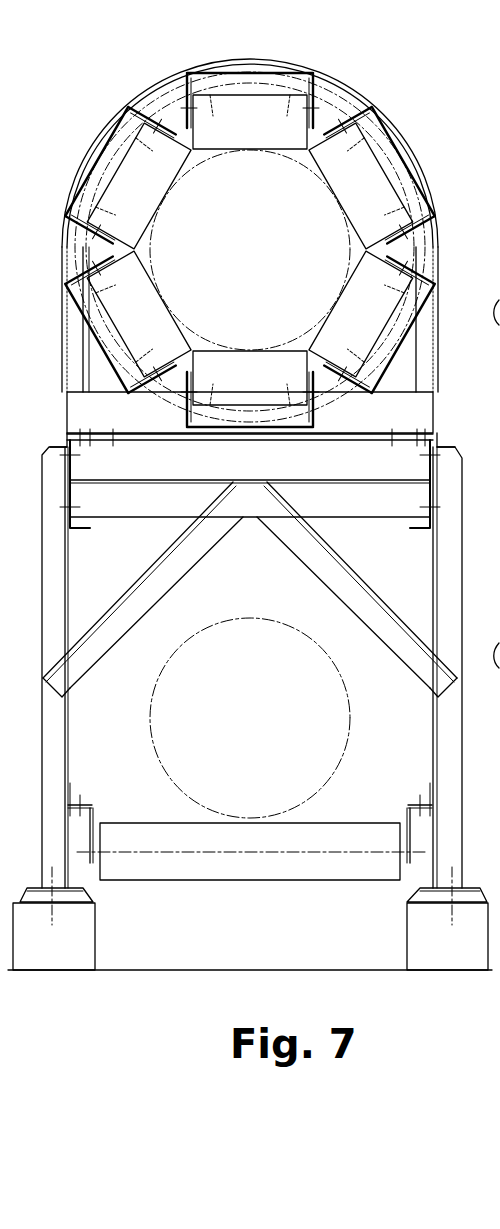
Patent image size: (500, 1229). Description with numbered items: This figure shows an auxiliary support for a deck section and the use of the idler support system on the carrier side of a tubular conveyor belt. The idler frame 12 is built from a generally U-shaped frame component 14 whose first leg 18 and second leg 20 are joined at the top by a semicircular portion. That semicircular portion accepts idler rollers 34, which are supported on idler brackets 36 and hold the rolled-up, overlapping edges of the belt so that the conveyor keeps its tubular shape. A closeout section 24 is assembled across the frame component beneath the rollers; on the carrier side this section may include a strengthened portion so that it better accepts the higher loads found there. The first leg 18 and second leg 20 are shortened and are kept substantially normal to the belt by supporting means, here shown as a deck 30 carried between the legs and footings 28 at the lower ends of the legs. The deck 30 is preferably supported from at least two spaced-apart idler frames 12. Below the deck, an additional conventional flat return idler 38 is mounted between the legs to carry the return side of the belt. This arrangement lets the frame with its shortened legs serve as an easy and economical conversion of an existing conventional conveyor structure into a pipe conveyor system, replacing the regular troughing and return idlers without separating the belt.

The idler frame 12 is at (432, 121).
The U-shaped frame component 14 is at (243, 60).
The first leg 18 is at (66, 323).
The second leg 20 is at (433, 370).
The closeout section 24 is at (437, 420).
The footing 28 is at (98, 946).
The deck 30 is at (73, 467).
The idler roller 34 is at (376, 200).
The idler bracket 36 is at (364, 108).
The flat return idler 38 is at (133, 822).